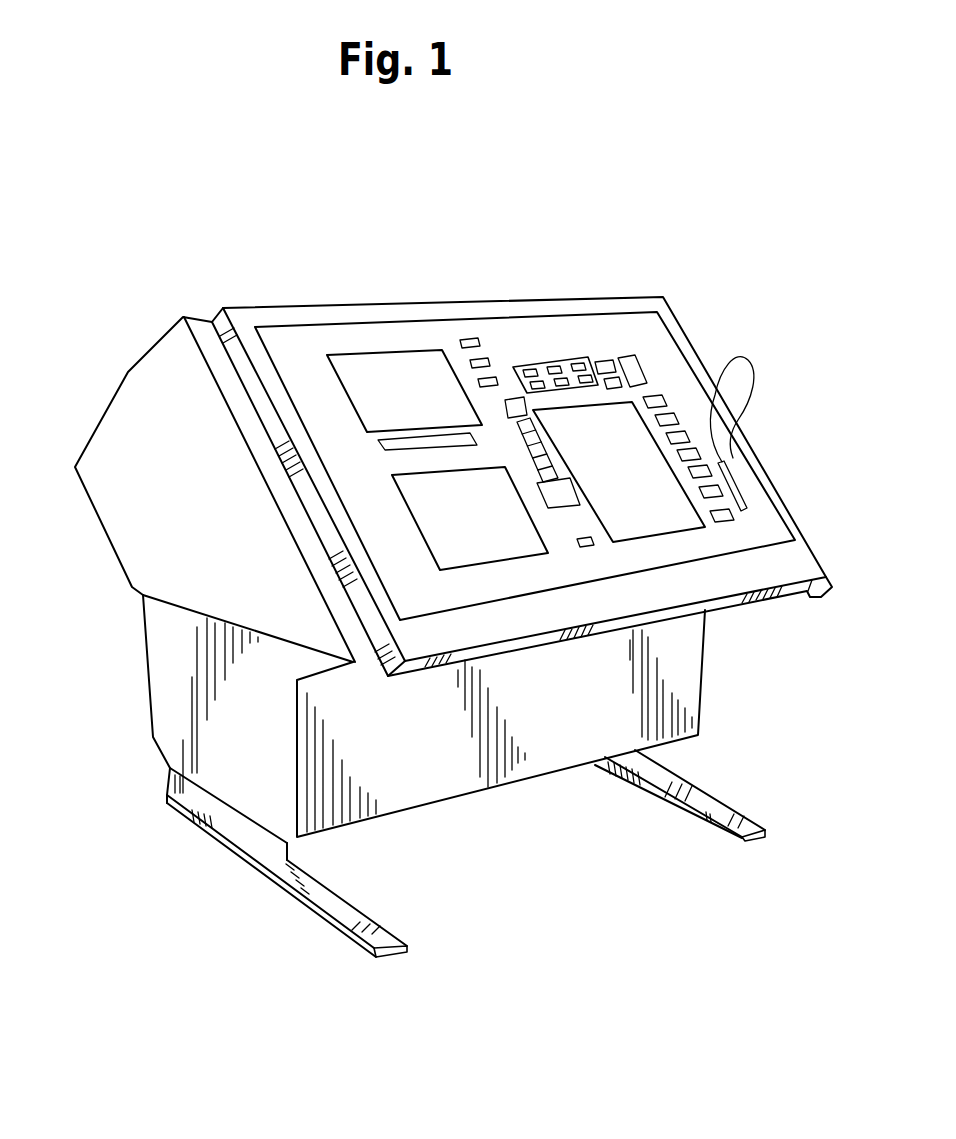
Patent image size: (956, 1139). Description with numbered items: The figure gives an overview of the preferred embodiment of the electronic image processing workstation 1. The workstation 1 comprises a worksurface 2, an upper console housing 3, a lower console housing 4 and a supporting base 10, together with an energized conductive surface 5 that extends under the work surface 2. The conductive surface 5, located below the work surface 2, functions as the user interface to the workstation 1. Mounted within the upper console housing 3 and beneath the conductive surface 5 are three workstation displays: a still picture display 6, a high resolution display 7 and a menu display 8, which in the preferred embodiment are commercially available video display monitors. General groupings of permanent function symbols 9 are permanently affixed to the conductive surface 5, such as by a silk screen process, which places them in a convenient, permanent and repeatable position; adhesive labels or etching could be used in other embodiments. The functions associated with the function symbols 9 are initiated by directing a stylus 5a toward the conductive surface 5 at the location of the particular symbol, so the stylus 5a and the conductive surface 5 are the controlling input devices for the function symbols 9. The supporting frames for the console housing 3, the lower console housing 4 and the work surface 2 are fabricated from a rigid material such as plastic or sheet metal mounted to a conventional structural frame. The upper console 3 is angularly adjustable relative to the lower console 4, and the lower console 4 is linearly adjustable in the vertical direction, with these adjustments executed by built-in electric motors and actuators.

The electronic image processing workstation 1 is at (421, 295).
The worksurface 2 is at (286, 345).
The upper console housing 3 is at (167, 513).
The lower console housing 4 is at (180, 710).
The energized conductive surface 5 is at (631, 340).
The stylus 5a is at (738, 474).
The still picture display 6 is at (380, 388).
The high resolution display 7 is at (647, 489).
The menu display 8 is at (482, 535).
The permanent function symbols 9 is at (577, 355).
The supporting base 10 is at (275, 875).